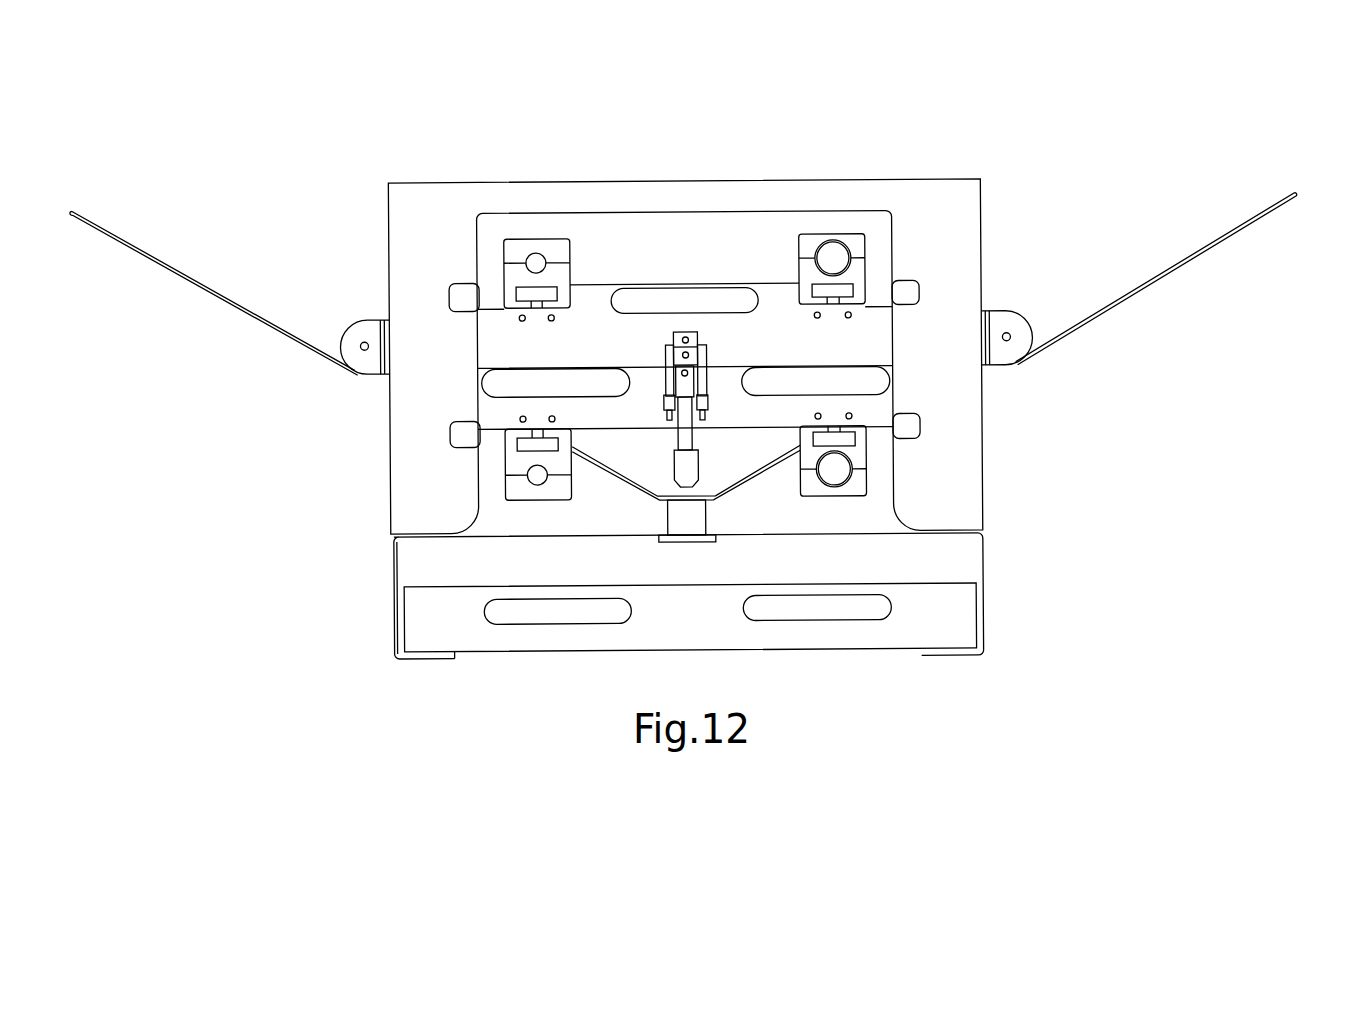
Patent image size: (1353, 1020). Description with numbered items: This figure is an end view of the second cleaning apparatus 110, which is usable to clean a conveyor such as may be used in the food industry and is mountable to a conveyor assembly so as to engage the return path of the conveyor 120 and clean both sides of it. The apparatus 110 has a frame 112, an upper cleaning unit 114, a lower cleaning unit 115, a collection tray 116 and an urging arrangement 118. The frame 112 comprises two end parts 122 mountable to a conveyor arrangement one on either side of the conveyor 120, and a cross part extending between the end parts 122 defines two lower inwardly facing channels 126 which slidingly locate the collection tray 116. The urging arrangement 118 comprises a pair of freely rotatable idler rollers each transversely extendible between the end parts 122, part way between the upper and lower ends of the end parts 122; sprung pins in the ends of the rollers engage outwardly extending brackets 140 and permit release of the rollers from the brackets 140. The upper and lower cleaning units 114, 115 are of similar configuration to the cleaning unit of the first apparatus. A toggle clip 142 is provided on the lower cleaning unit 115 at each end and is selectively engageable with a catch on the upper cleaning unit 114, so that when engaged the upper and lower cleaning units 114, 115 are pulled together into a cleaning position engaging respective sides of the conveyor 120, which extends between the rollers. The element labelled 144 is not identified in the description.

The second cleaning apparatus 110 is at (700, 426).
The frame 112 is at (985, 424).
The upper cleaning unit 114 is at (853, 343).
The lower cleaning unit 115 is at (877, 410).
The collection tray 116 is at (933, 627).
The urging arrangement 118 is at (230, 322).
The conveyor 120 is at (1255, 223).
The end parts 122 is at (955, 508).
The lower inwardly facing channels 126 is at (397, 622).
The brackets 140 is at (363, 353).
The toggle clip 142 is at (705, 370).
The clamp block 144 is at (684, 332).